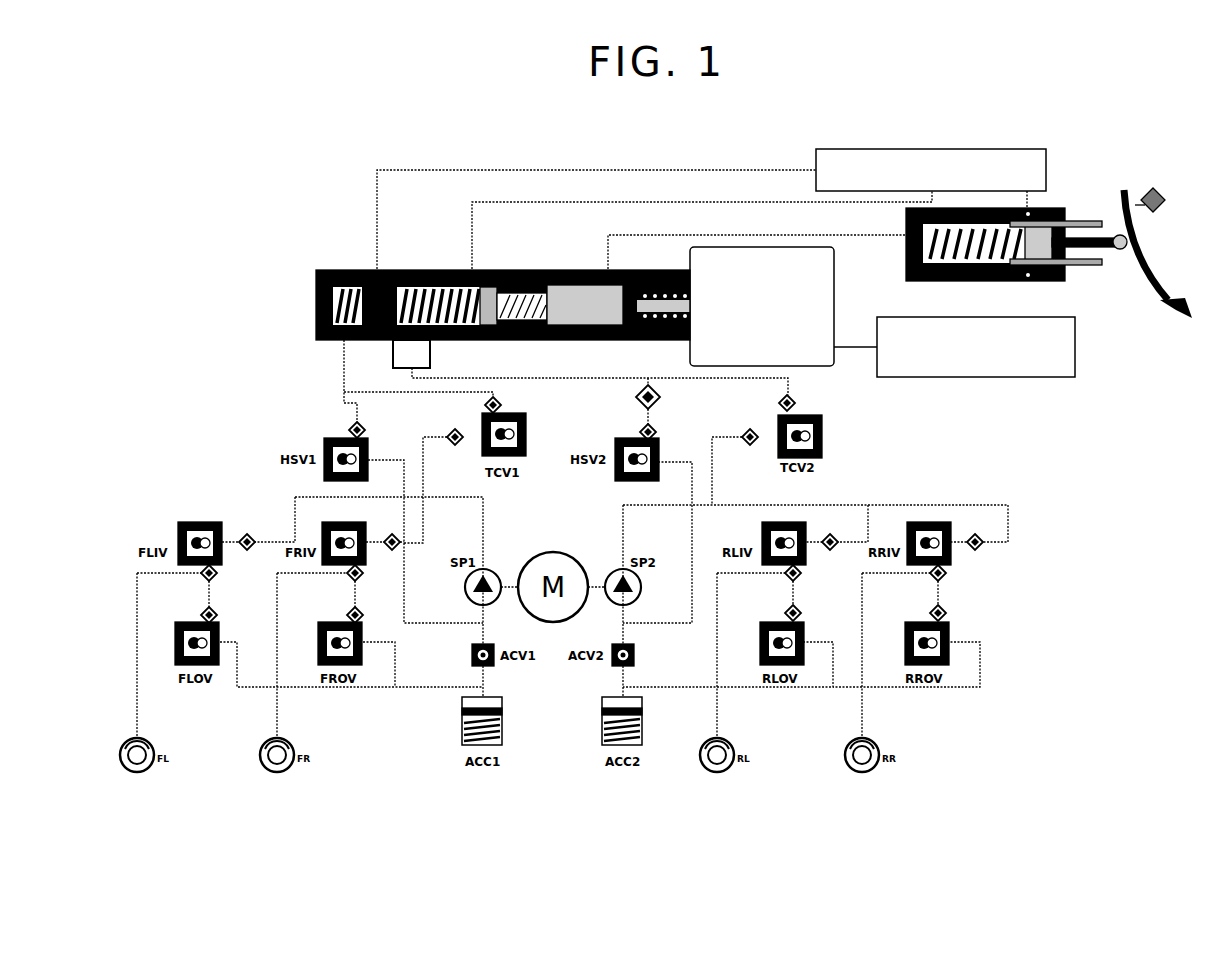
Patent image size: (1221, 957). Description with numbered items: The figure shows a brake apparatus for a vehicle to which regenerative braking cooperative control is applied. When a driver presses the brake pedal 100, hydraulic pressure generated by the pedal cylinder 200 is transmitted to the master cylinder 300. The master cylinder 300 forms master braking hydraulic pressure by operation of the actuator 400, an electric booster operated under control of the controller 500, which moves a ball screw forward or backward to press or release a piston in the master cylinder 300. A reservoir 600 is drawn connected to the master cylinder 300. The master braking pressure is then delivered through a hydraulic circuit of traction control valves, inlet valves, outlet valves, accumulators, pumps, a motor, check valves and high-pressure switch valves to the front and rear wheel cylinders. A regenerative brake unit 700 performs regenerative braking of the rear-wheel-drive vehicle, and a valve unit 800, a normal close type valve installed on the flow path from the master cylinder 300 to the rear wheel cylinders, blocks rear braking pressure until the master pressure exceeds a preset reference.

The brake pedal 100 is at (1176, 280).
The pedal cylinder 200 is at (1060, 207).
The master cylinder 300 is at (330, 268).
The actuator 400 is at (834, 366).
The controller 500 is at (809, 338).
The reservoir 600 is at (1010, 148).
The regenerative brake unit 700 is at (1078, 347).
The valve unit 800 is at (432, 355).